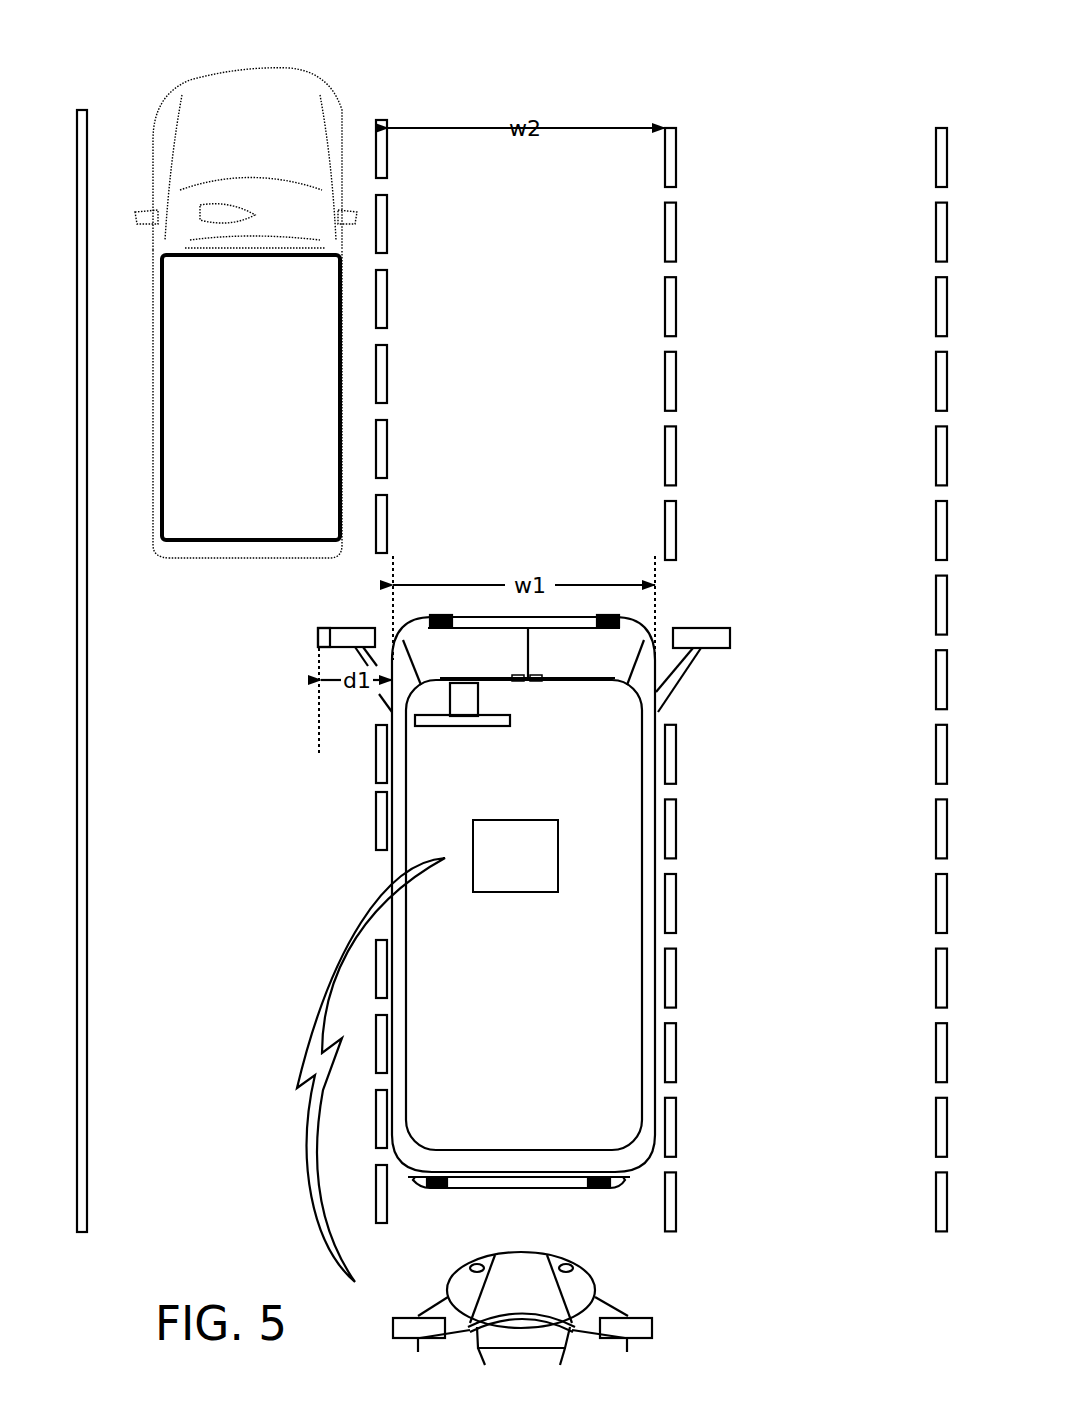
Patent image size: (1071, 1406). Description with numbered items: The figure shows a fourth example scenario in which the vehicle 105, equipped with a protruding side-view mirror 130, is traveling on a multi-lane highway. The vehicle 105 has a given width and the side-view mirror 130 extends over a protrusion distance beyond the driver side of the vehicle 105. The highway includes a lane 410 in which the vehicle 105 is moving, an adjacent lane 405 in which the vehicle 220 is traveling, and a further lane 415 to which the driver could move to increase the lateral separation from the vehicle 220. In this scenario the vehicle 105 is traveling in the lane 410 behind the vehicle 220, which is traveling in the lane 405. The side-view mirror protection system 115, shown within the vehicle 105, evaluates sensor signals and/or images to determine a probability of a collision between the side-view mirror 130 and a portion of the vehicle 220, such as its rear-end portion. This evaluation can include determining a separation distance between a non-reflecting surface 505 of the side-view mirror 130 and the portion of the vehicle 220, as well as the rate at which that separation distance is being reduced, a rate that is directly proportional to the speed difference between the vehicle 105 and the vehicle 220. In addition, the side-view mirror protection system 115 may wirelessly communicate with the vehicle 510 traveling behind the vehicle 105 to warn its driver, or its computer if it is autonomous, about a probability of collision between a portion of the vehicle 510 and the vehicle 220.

The vehicle 105 is at (721, 721).
The side-view mirror protection system 115 is at (497, 870).
The side-view mirror 130 is at (316, 637).
The vehicle 220 is at (171, 84).
The lane 405 is at (94, 1262).
The lane 410 is at (651, 1232).
The lane 415 is at (856, 1246).
The non-reflecting surface 505 is at (335, 620).
The vehicle 510 is at (653, 1305).